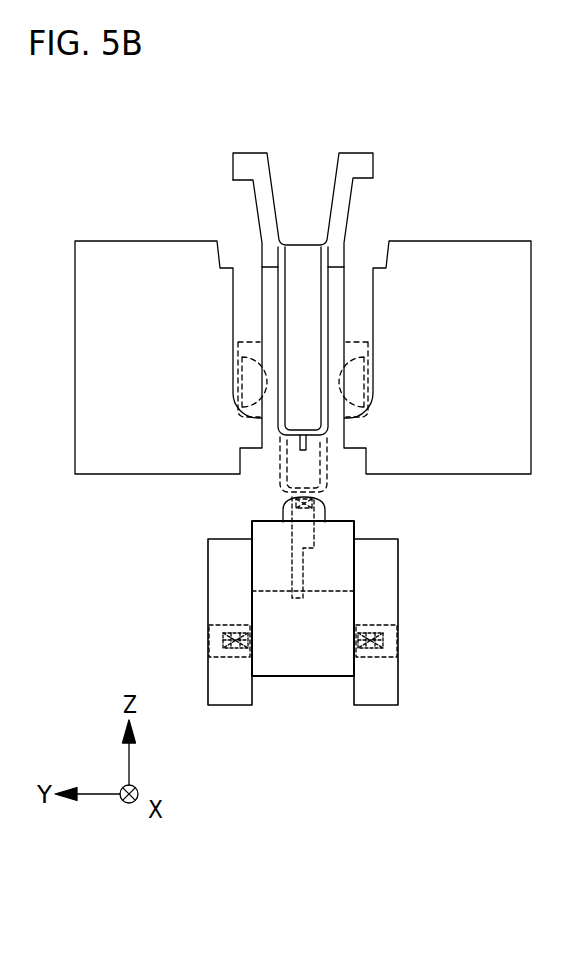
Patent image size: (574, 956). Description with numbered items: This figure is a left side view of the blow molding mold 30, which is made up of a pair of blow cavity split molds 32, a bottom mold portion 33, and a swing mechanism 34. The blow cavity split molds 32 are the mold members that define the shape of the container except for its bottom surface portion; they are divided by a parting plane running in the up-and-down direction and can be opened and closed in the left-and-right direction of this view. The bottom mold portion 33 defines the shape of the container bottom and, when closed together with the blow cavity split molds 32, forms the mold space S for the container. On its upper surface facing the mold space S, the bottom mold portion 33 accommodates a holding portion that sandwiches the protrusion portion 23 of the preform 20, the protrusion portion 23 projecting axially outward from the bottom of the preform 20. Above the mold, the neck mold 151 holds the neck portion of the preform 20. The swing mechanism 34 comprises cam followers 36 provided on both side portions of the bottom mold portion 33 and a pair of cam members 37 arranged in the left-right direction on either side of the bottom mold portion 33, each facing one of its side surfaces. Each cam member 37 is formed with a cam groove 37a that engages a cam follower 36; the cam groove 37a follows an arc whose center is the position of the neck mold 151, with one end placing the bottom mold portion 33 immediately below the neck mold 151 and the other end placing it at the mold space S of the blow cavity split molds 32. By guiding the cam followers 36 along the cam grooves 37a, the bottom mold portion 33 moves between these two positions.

The blow molding mold 30 is at (336, 281).
The blow cavity split mold 32 is at (149, 226).
The neck mold 151 is at (353, 188).
The preform 20 is at (329, 374).
The protrusion portion 23 is at (297, 445).
The mold space S is at (235, 315).
The bottom mold portion 33 is at (306, 696).
The swing mechanism 34 is at (305, 622).
The cam member 37 is at (208, 593).
The cam groove 37a is at (217, 655).
The cam follower 36 is at (232, 658).